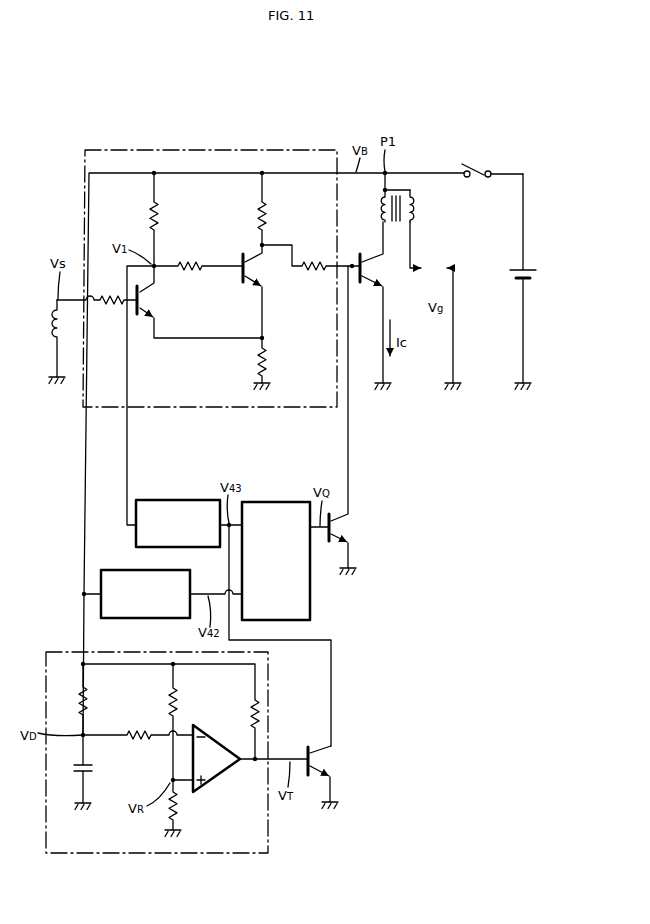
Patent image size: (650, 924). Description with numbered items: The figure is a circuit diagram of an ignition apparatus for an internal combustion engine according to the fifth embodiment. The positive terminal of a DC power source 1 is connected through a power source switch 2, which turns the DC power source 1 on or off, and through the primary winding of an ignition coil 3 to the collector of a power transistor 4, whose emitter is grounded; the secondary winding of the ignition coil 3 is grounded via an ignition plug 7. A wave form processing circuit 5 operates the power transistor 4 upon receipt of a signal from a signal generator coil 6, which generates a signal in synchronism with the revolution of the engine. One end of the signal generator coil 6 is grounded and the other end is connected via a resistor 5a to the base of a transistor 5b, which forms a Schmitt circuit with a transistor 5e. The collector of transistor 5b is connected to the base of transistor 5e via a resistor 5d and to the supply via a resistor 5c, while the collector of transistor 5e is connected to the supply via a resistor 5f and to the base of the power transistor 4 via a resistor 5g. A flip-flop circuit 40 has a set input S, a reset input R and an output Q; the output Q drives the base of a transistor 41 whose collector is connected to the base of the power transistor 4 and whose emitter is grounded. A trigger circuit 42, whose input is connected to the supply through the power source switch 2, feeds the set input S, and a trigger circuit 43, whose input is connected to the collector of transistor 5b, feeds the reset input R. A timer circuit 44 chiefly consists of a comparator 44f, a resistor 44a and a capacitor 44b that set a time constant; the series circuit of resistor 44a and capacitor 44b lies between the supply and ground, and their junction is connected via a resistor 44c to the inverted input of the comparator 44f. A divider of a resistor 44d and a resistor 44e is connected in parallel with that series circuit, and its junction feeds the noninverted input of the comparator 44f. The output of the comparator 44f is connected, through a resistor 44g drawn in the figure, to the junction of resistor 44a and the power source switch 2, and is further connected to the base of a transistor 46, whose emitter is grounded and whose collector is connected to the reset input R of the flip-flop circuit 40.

The DC power source 1 is at (537, 276).
The power source switch 2 is at (469, 165).
The ignition coil 3 is at (415, 208).
The power transistor 4 is at (370, 268).
The wave form processing circuit 5 is at (214, 150).
The resistor 5a is at (115, 308).
The transistor 5b is at (148, 298).
The resistor 5c is at (158, 215).
The resistor 5d is at (197, 264).
The transistor 5e is at (258, 282).
The resistor 5f is at (266, 212).
The resistor 5g is at (316, 264).
The signal generator coil 6 is at (52, 322).
The ignition plug 7 is at (430, 294).
The flip-flop circuit 40 is at (273, 502).
The transistor 41 is at (345, 528).
The trigger circuit 42 is at (110, 570).
The trigger circuit 43 is at (178, 500).
The timer circuit 44 is at (54, 652).
The resistor 44a is at (88, 694).
The capacitor 44b is at (92, 770).
The resistor 44c is at (140, 740).
The resistor 44d is at (178, 701).
The resistor 44e is at (178, 808).
The comparator 44f is at (233, 771).
The resistor 44g is at (252, 720).
The transistor 46 is at (320, 758).